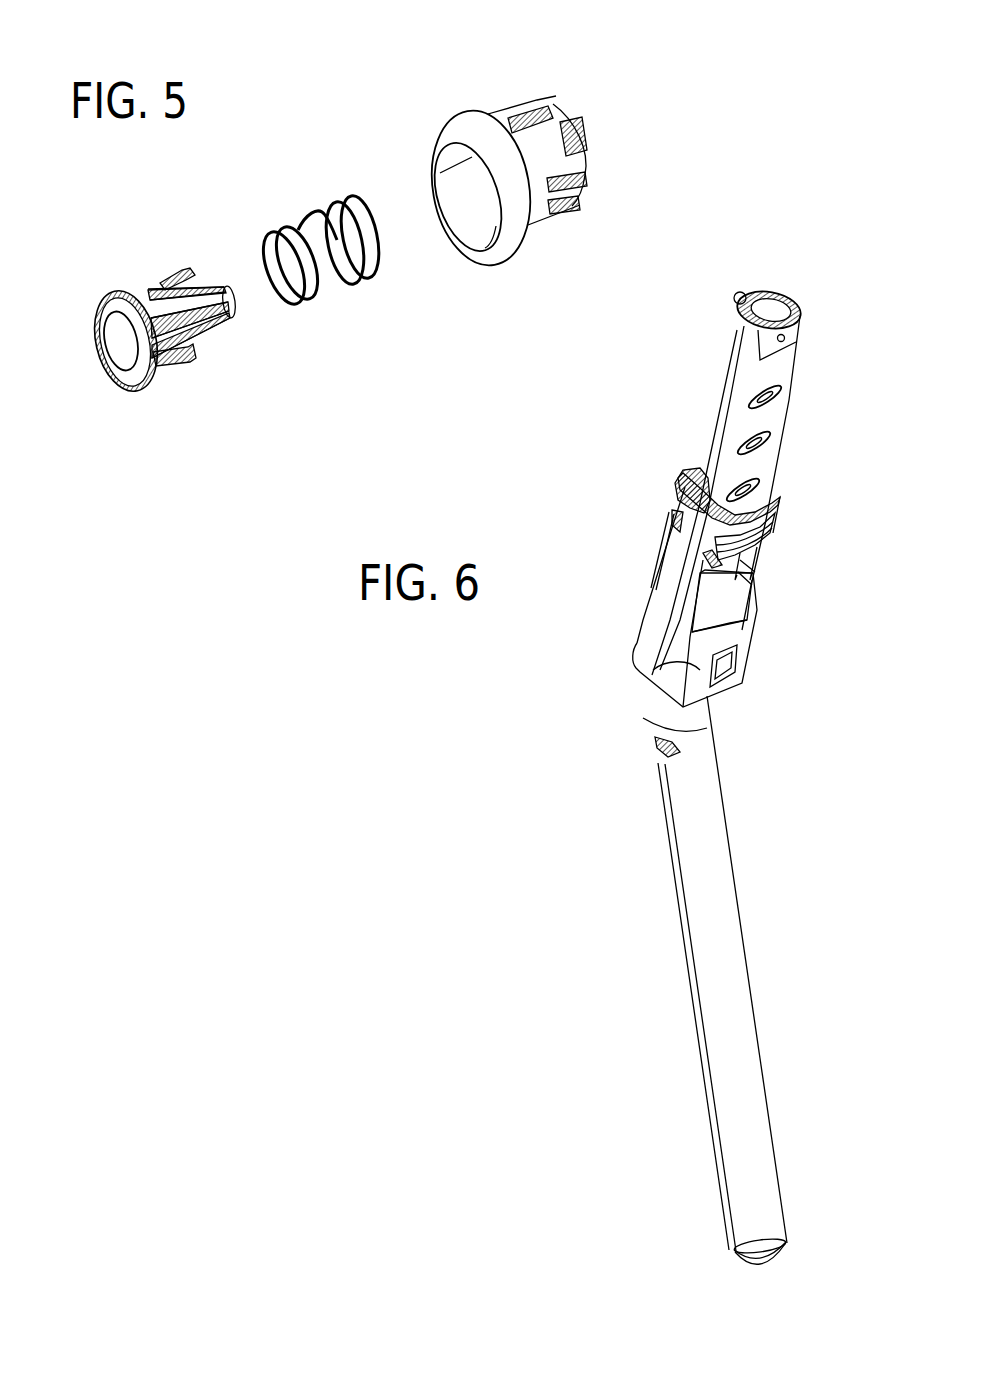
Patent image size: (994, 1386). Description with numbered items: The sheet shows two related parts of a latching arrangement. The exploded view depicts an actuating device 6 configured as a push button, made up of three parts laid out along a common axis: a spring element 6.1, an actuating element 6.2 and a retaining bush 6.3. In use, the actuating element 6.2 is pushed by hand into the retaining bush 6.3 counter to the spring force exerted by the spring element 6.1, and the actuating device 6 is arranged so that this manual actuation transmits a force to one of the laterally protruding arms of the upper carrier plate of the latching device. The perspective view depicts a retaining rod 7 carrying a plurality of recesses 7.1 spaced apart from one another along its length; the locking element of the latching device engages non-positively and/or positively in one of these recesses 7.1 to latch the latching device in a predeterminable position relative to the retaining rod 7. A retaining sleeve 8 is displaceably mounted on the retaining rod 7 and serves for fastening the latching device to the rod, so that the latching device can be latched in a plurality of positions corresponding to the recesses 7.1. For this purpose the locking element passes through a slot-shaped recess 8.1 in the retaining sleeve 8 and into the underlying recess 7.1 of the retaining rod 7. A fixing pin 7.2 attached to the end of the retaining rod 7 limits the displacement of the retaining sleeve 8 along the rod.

In FIG. 5, the actuating device 6 is at (408, 116).
In FIG. 5, the spring element 6.1 is at (310, 212).
In FIG. 5, the actuating element 6.2 is at (96, 306).
In FIG. 5, the retaining bush 6.3 is at (547, 148).
In FIG. 6, the retaining rod 7 is at (726, 370).
In FIG. 6, the recesses 7.1 is at (783, 393).
In FIG. 6, the fixing pin 7.2 is at (772, 293).
In FIG. 6, the retaining sleeve 8 is at (640, 675).
In FIG. 6, the slot-shaped recess 8.1 is at (778, 534).